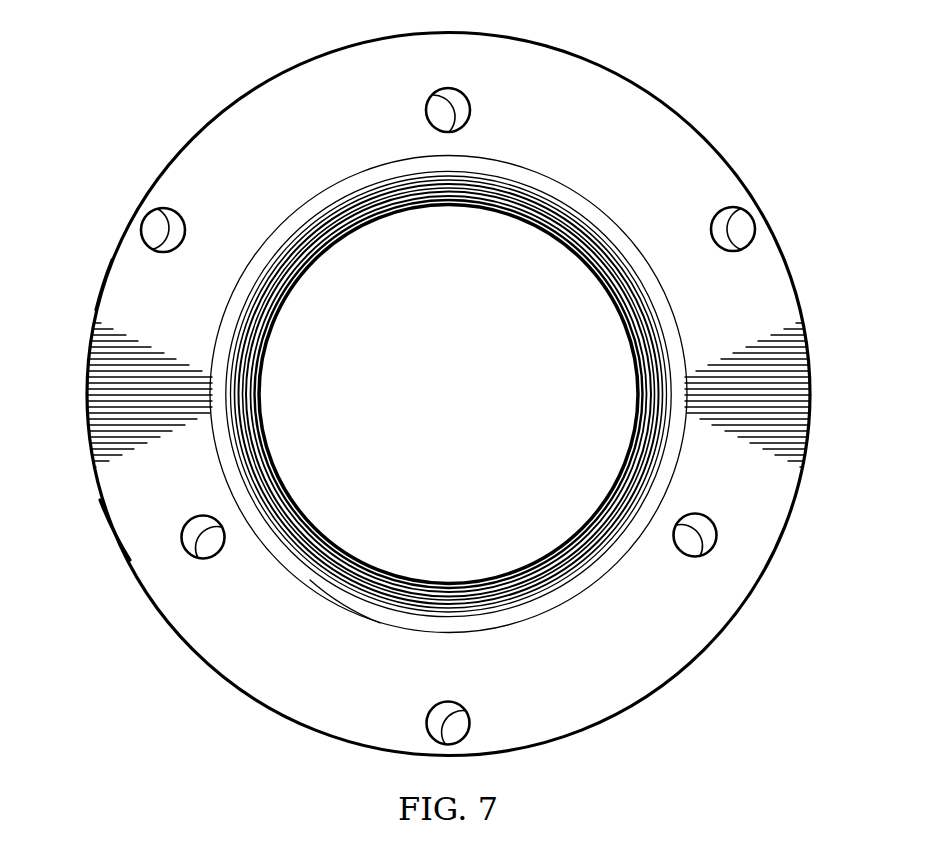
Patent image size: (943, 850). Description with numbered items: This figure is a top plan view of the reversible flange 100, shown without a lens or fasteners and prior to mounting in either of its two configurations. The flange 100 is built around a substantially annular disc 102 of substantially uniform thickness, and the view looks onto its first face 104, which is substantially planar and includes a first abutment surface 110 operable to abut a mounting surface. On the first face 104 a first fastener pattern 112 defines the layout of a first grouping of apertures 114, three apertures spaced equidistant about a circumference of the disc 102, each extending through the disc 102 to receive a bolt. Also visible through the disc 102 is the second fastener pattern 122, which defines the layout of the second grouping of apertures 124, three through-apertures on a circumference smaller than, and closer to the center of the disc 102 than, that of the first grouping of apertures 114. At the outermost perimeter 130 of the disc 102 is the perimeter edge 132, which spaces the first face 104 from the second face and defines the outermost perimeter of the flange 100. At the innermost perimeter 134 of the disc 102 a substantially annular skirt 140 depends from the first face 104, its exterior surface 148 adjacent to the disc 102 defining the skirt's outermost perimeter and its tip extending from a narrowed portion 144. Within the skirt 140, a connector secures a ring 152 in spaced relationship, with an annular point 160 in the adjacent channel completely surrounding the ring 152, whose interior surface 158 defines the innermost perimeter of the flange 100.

The reversible flange 100 is at (756, 58).
The annular disc 102 is at (264, 78).
The first face 104 is at (320, 58).
The first abutment surface 110 is at (103, 285).
The first fastener pattern 112 is at (172, 221).
The first grouping of apertures 114 is at (155, 220).
The second fastener pattern 122 is at (453, 102).
The second grouping of apertures 124 is at (430, 110).
The outermost perimeter 130 is at (87, 395).
The perimeter edge 132 is at (112, 530).
The innermost perimeter 134 is at (346, 611).
The skirt 140 is at (533, 154).
The narrowed portion 144 is at (563, 195).
The exterior surface 148 is at (611, 218).
The ring 152 is at (402, 220).
The interior surface 158 is at (536, 222).
The annular point 160 is at (648, 318).